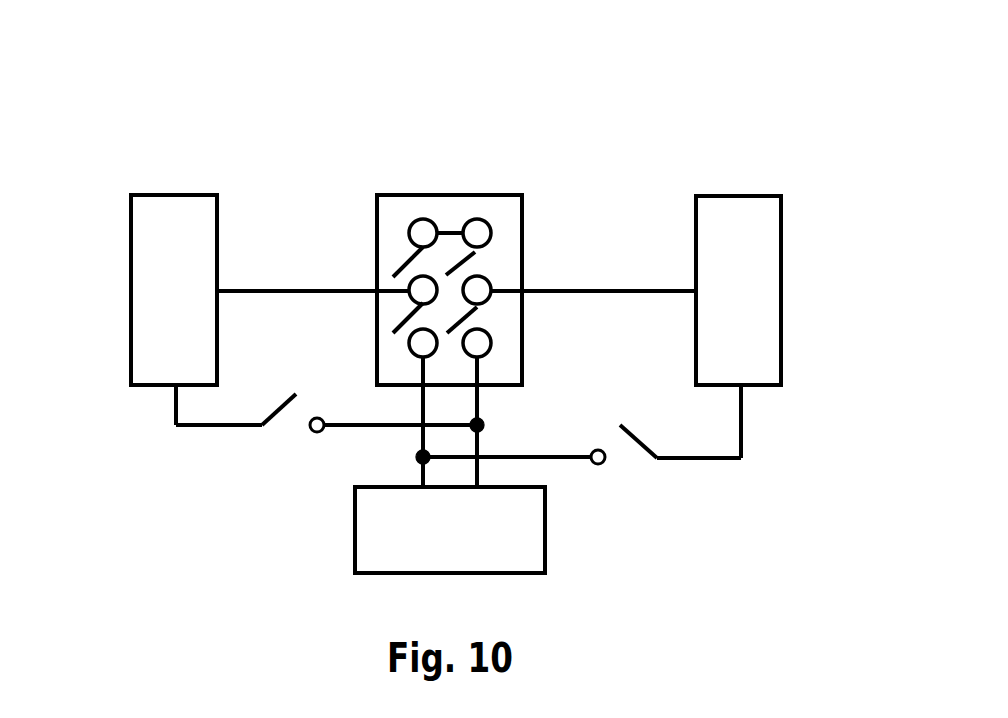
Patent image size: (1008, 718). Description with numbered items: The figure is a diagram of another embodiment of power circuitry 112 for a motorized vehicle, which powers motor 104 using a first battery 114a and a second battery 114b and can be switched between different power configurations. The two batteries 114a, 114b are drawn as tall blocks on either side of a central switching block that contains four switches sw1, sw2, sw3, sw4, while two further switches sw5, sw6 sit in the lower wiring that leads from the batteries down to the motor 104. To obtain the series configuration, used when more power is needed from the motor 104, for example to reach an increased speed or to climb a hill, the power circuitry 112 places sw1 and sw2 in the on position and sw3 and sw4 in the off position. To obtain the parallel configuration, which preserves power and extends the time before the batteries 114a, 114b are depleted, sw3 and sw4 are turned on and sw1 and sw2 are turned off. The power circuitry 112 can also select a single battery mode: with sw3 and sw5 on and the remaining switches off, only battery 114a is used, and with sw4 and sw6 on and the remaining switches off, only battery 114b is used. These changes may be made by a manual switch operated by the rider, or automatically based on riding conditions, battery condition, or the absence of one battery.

The motor 104 is at (545, 527).
The power circuitry 112 is at (752, 98).
The first battery 114a is at (200, 195).
The second battery 114b is at (745, 195).
The switch sw1 is at (410, 252).
The switch sw2 is at (476, 257).
The switch sw3 is at (400, 327).
The switch sw4 is at (457, 326).
The switch sw5 is at (278, 441).
The switch sw6 is at (663, 461).